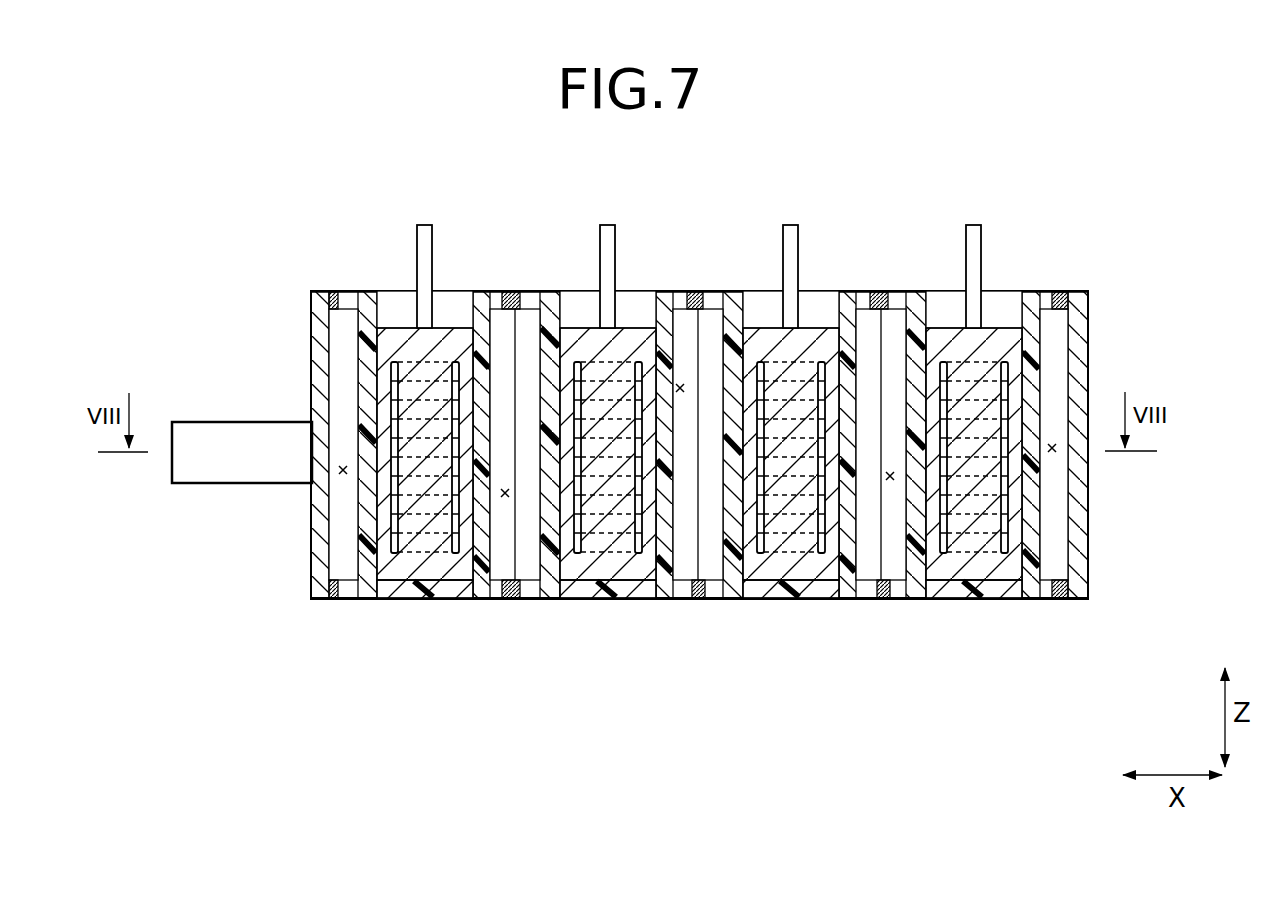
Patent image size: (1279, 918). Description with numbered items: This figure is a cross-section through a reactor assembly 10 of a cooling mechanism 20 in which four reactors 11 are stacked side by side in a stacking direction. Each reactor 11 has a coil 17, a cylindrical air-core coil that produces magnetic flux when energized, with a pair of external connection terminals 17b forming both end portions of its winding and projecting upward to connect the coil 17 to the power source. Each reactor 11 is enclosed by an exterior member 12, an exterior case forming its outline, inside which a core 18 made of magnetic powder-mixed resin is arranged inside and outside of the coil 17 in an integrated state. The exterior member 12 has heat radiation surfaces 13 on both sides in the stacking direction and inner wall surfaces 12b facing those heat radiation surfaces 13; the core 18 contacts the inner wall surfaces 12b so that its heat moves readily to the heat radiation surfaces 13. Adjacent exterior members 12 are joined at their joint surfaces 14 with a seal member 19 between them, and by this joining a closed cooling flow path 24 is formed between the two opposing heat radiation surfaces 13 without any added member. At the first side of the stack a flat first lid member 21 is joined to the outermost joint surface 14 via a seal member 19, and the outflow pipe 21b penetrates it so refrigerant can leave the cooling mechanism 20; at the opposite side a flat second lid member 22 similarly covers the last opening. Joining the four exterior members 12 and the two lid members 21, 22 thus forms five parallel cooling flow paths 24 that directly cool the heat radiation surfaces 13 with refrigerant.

The battery module 10 is at (1113, 248).
The reactor 11 is at (345, 290).
The exterior member 12 is at (474, 296).
The inner wall surface 12b is at (382, 598).
The heat radiation surface 13 is at (348, 352).
The joint surface 14 is at (462, 358).
The coil 17 is at (411, 362).
The external connection terminal 17b is at (608, 226).
The core 18 is at (432, 598).
The seal member 19 is at (336, 600).
The cooling mechanism 20 is at (289, 293).
The first lid member 21 is at (307, 565).
The outflow pipe 21b is at (203, 430).
The second lid member 22 is at (1090, 568).
The cooling flow path 24 is at (505, 495).